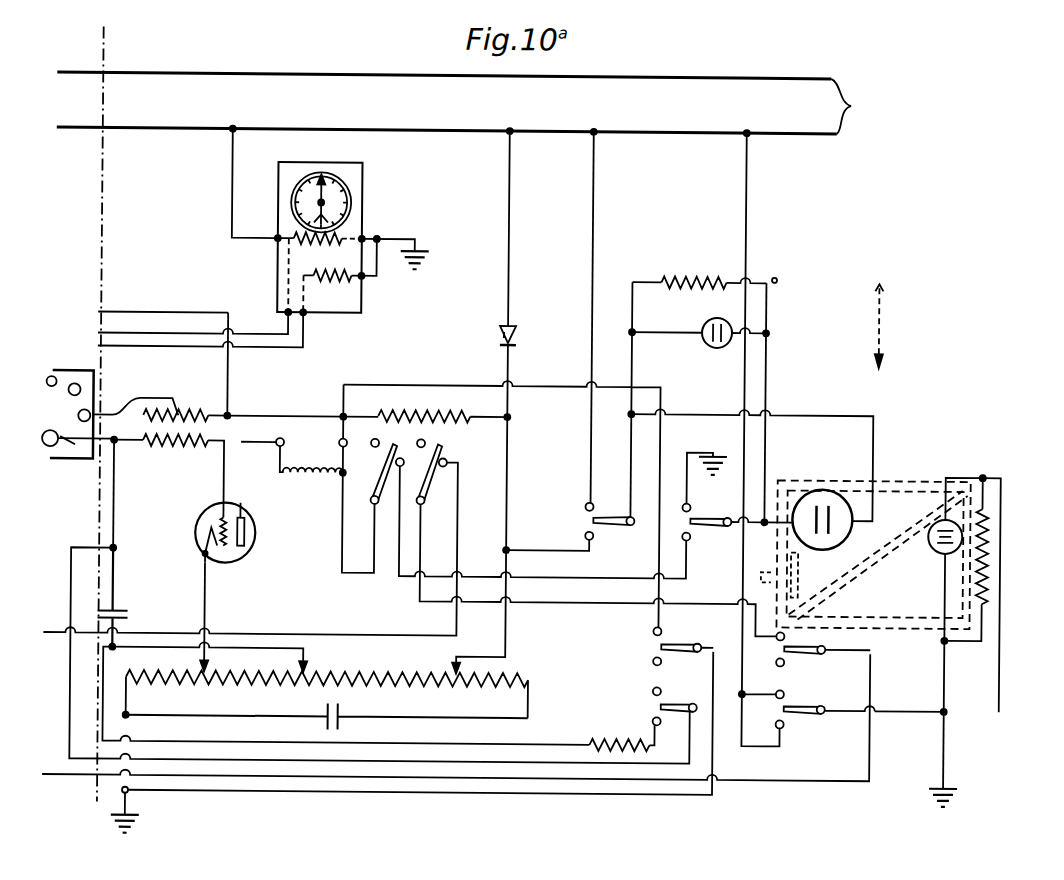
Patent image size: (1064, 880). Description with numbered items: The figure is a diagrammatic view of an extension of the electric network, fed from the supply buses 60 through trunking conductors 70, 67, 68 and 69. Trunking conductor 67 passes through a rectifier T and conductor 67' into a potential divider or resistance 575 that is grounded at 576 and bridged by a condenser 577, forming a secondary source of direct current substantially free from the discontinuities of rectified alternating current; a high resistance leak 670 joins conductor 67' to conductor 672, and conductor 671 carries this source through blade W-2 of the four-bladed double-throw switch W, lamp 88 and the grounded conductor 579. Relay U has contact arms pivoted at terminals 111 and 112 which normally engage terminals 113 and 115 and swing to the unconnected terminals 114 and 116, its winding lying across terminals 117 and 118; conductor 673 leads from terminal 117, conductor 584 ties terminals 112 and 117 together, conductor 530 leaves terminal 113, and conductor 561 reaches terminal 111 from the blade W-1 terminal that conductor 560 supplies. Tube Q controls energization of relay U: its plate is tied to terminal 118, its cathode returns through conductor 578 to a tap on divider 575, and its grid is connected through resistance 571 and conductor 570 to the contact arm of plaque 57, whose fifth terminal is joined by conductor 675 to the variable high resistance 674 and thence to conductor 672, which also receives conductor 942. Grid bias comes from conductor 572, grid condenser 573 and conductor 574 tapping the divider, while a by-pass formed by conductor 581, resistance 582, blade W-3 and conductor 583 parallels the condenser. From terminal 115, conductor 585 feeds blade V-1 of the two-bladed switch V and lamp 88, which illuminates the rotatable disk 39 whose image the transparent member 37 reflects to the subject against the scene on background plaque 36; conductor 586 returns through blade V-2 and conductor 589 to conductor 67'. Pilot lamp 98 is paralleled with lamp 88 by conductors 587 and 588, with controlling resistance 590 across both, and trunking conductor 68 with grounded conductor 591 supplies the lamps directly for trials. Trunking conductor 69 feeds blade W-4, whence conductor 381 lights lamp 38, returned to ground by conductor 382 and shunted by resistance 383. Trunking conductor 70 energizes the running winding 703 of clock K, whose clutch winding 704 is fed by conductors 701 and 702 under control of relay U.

The supply buses 60 is at (466, 104).
The trunking conductor 70 is at (232, 154).
The trunking conductor 67 is at (525, 366).
The conductor 67' is at (499, 638).
The trunking conductor 68 is at (594, 162).
The trunking conductor 69 is at (746, 162).
The clock K is at (392, 196).
The running winding 703 is at (342, 237).
The clutch winding 704 is at (348, 284).
The conductor 942 is at (201, 314).
The conductor 701 is at (140, 336).
The conductor 702 is at (229, 346).
The plaque 57 is at (64, 364).
The conductor 570 is at (80, 452).
The conductor 675 is at (113, 413).
The variable high resistance 674 is at (192, 414).
The conductor 672 is at (286, 416).
The conductor 673 is at (343, 408).
The conductor 671 is at (383, 386).
The high resistance leak 670 is at (440, 410).
The resistance 571 is at (187, 450).
The conductor 572 is at (116, 518).
The conductor 583 is at (72, 572).
The grid condenser 573 is at (132, 611).
The tube Q is at (258, 586).
The conductor 578 is at (208, 609).
The conductor 574 is at (250, 648).
The conductor 530 is at (350, 634).
The potential divider 575 is at (334, 676).
The condenser 577 is at (345, 711).
The conductor 581 is at (430, 744).
The resistance 582 is at (627, 743).
The ground 576 is at (135, 813).
The conductor 560 is at (338, 780).
The conductor 579 is at (718, 791).
The rectifier T is at (540, 356).
The controlling resistance 590 is at (685, 277).
The pilot lamp 98 is at (704, 326).
The conductor 588 is at (636, 369).
The conductor 587 is at (768, 366).
The conductor 586 is at (836, 406).
The conductor 591 is at (710, 450).
The switch blade V-2 is at (604, 513).
The switch blade V-1 is at (716, 527).
The switch V is at (628, 553).
The conductor 589 is at (545, 550).
The conductor 585 is at (596, 578).
The conductor 561 is at (566, 603).
The switch blade W-1 is at (800, 643).
The switch blade W-2 is at (683, 640).
The switch blade W-3 is at (676, 700).
The switch blade W-4 is at (800, 712).
The switch W is at (820, 694).
The conductor 381 is at (905, 712).
The conductor 382 is at (950, 748).
The background plaque 36 is at (882, 610).
The transparent member 37 is at (902, 540).
The rotatable disk 39 is at (800, 567).
The lamp 88 is at (840, 478).
The lamp 38 is at (936, 548).
The controlling resistance 383 is at (989, 565).
The conductor 584 is at (340, 540).
The relay terminal 117 is at (338, 444).
The relay terminal 116 is at (376, 440).
The relay terminal 118 is at (280, 440).
The relay U is at (314, 502).
The relay terminal 114 is at (426, 443).
The relay terminal 113 is at (448, 462).
The relay terminal 115 is at (414, 460).
The contact arm terminal 112 is at (372, 505).
The contact arm terminal 111 is at (425, 505).